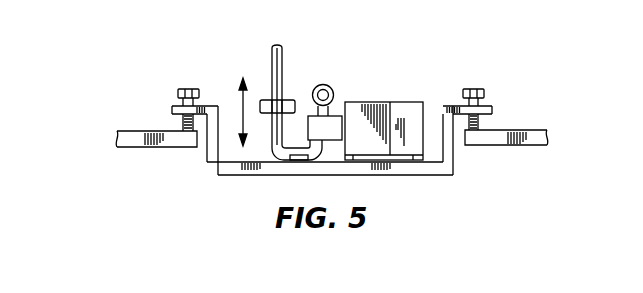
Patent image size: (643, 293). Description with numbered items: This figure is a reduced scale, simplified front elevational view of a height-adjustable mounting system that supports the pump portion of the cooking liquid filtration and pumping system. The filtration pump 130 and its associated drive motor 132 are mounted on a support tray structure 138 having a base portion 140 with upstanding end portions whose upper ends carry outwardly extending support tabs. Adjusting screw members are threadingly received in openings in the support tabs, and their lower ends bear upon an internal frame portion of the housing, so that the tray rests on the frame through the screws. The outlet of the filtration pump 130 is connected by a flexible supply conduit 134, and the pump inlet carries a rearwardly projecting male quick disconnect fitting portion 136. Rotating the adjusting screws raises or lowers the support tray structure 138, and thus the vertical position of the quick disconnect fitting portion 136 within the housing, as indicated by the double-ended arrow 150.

The filtration pump 130 is at (332, 116).
The drive motor 132 is at (405, 102).
The flexible supply conduit 134 is at (273, 46).
The male quick disconnect fitting portion 136 is at (323, 84).
The support tray structure 138 is at (455, 176).
The base portion 140 is at (407, 177).
The double-ended arrow 150 is at (228, 98).